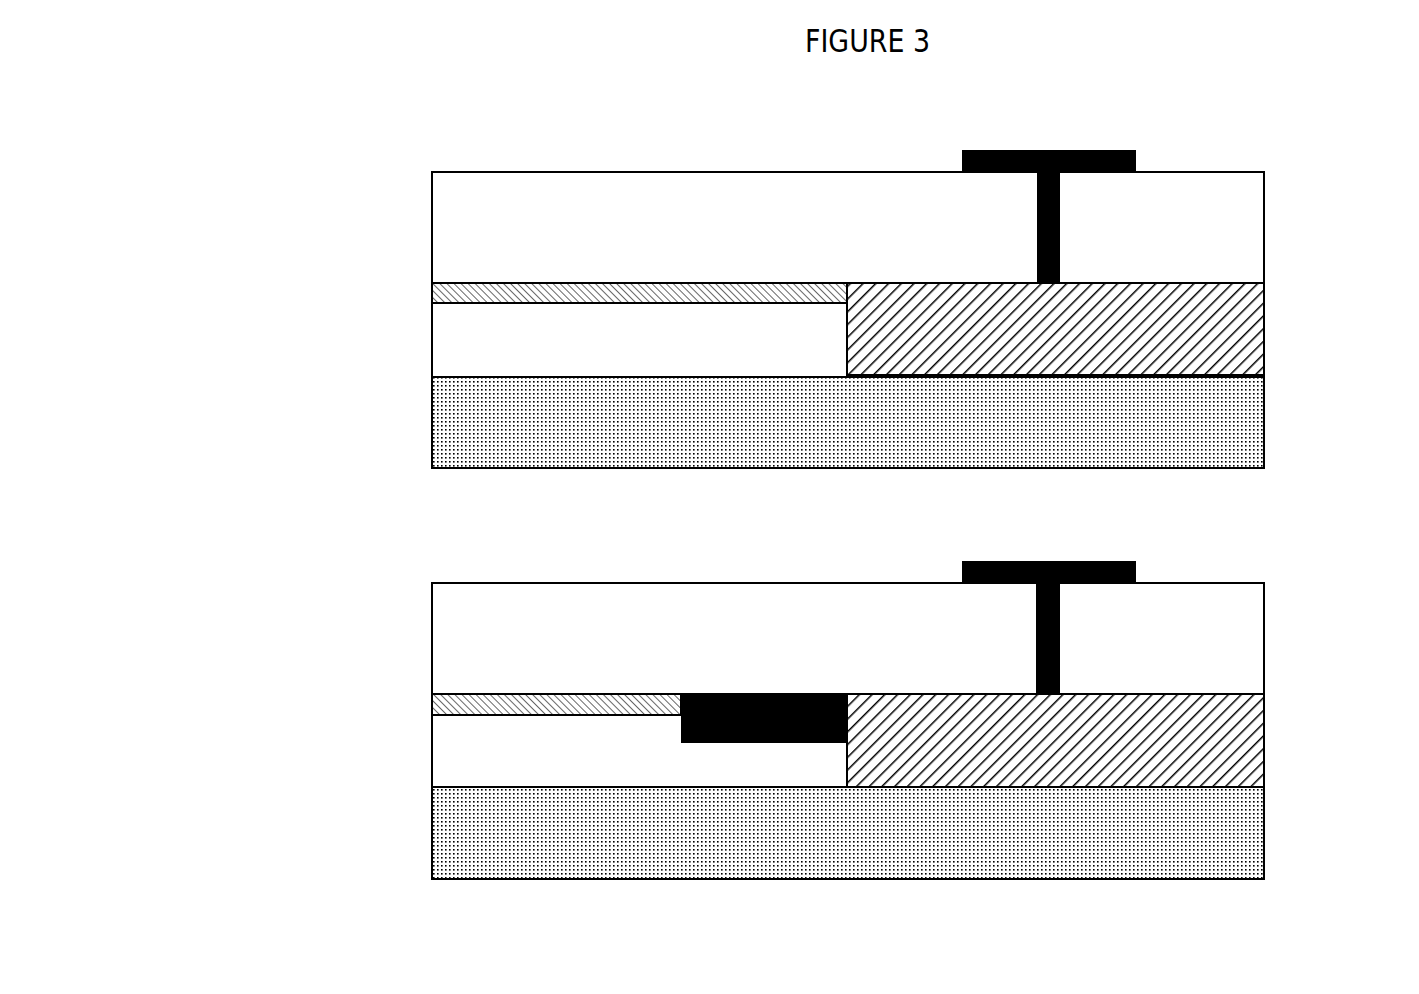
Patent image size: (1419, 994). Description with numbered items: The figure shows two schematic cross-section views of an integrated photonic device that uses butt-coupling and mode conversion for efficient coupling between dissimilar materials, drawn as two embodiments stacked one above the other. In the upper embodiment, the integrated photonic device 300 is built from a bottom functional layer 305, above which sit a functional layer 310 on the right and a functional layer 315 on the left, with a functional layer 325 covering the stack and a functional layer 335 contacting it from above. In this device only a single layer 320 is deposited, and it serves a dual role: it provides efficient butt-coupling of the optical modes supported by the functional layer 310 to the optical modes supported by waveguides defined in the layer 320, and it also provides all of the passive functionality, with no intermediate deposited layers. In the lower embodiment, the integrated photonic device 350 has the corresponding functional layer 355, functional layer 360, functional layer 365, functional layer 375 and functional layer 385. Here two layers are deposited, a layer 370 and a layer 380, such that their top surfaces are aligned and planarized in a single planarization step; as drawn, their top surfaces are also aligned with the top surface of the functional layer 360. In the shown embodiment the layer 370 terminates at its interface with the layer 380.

The integrated photonic device 300 is at (337, 139).
The functional layer 305 is at (1265, 418).
The functional layer 310 is at (1265, 318).
The functional layer 315 is at (432, 340).
The layer 320 is at (488, 283).
The functional layer 325 is at (1265, 210).
The functional layer 335 is at (1093, 151).
The integrated photonic device 350 is at (294, 559).
The functional layer 355 is at (1265, 830).
The functional layer 360 is at (1265, 728).
The functional layer 365 is at (432, 752).
The layer 370 is at (488, 694).
The functional layer 375 is at (1265, 623).
The layer 380 is at (750, 743).
The functional layer 385 is at (1093, 561).